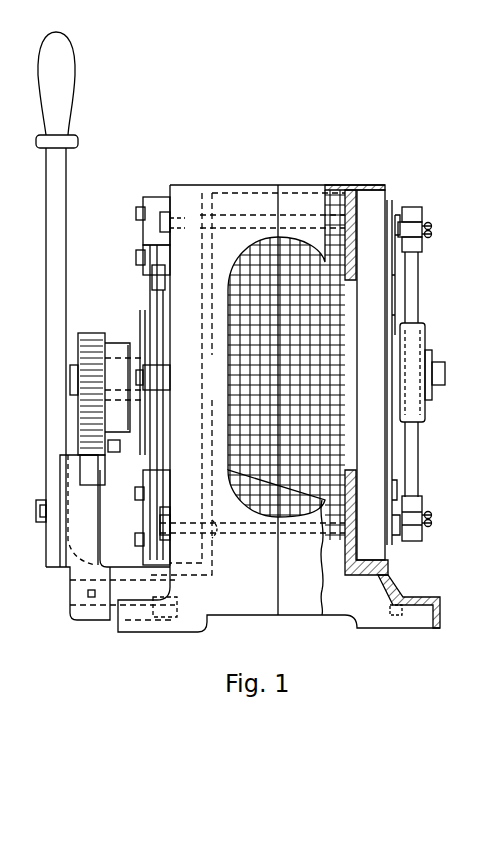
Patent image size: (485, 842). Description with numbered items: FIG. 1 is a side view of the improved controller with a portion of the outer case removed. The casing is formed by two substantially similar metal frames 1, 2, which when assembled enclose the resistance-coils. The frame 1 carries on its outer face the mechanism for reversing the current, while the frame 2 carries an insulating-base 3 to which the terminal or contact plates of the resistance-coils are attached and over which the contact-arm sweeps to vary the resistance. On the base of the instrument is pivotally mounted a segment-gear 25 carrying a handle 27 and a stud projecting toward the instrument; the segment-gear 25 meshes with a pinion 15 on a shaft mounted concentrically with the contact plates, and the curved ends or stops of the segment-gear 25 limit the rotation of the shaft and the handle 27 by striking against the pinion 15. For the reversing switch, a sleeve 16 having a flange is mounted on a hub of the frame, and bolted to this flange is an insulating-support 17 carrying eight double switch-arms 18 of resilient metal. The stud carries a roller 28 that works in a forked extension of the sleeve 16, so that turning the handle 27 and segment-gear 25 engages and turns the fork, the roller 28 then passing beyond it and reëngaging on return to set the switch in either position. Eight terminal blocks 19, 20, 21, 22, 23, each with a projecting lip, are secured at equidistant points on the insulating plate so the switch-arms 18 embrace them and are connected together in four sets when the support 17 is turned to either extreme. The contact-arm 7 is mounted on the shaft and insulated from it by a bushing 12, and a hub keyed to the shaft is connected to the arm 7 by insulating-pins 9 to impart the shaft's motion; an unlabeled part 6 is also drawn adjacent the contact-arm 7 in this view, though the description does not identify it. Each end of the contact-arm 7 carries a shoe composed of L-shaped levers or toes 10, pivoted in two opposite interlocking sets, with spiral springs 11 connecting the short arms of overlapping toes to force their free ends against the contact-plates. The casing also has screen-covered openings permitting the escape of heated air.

The frame 1 is at (243, 408).
The frame 2 is at (367, 406).
The insulating-base 3 is at (371, 375).
The bearing block 6 is at (412, 372).
The contact-arm 7 is at (415, 352).
The insulating-pins 9 is at (392, 420).
The levers or toes 10 is at (424, 512).
The spiral springs 11 is at (433, 519).
The bushing 12 is at (428, 398).
The pinion 15 is at (92, 333).
The sleeve 16 is at (120, 343).
The insulating-support 17 is at (145, 460).
The double switch-arms 18 is at (145, 478).
The terminal blocks 19 is at (153, 377).
The terminal blocks 20 is at (145, 505).
The terminal block 21 is at (145, 553).
The terminal block 22 is at (151, 197).
The terminal blocks 23 is at (143, 252).
The segment-gear 25 is at (67, 511).
The handle 27 is at (57, 299).
The roller 28 is at (119, 447).